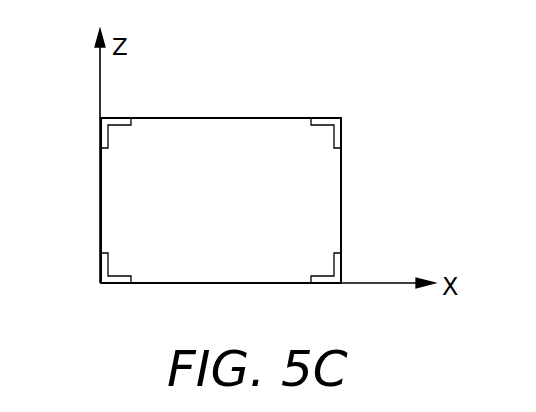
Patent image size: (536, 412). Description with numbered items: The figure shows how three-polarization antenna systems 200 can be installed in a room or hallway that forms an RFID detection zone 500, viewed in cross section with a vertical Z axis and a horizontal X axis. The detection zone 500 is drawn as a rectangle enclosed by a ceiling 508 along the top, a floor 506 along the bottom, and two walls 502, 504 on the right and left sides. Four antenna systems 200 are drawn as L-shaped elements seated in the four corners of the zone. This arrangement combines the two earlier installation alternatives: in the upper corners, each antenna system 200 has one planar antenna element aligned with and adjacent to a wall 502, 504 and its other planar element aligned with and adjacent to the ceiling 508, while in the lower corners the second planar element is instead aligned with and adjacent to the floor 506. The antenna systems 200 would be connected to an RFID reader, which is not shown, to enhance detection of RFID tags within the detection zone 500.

The antenna system 200 is at (126, 143).
The RFID detection zone 500 is at (243, 208).
The wall 502 is at (341, 180).
The wall 504 is at (101, 179).
The floor 506 is at (255, 284).
The ceiling 508 is at (247, 117).